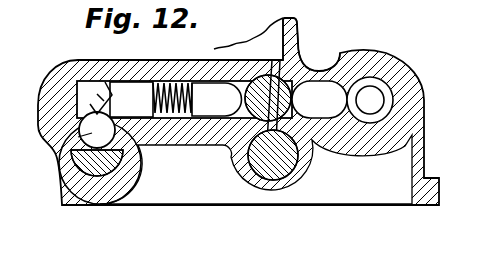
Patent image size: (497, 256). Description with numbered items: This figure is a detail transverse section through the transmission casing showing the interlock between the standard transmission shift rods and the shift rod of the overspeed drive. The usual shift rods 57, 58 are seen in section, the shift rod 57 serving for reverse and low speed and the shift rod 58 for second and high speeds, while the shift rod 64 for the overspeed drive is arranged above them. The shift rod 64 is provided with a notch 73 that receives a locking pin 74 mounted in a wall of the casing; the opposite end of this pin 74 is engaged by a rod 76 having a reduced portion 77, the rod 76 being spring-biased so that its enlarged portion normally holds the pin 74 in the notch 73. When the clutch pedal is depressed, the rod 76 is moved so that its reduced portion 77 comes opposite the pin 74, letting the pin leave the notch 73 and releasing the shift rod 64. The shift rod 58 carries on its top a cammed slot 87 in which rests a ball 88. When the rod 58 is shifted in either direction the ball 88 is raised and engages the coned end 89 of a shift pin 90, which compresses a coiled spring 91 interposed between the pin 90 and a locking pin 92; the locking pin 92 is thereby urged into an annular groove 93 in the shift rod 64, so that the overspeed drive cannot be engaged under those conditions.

The shift rod 57 is at (277, 168).
The shift rod 58 is at (95, 174).
The shift rod 64 is at (284, 117).
The notch 73 is at (300, 73).
The locking pin 74 is at (324, 88).
The rod 76 is at (388, 83).
The reduced portion 77 is at (372, 102).
The cammed slot 87 is at (111, 166).
The ball 88 is at (56, 150).
The coned end 89 is at (104, 81).
The shift pin 90 is at (128, 92).
The coiled spring 91 is at (176, 114).
The locking pin 92 is at (223, 106).
The annular groove 93 is at (265, 84).